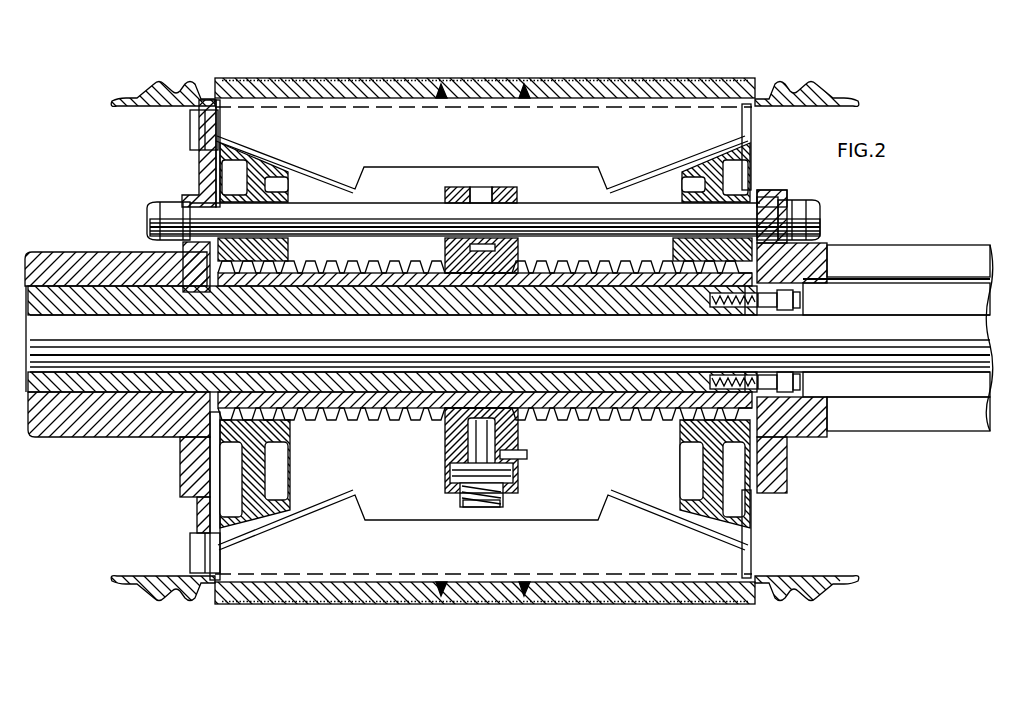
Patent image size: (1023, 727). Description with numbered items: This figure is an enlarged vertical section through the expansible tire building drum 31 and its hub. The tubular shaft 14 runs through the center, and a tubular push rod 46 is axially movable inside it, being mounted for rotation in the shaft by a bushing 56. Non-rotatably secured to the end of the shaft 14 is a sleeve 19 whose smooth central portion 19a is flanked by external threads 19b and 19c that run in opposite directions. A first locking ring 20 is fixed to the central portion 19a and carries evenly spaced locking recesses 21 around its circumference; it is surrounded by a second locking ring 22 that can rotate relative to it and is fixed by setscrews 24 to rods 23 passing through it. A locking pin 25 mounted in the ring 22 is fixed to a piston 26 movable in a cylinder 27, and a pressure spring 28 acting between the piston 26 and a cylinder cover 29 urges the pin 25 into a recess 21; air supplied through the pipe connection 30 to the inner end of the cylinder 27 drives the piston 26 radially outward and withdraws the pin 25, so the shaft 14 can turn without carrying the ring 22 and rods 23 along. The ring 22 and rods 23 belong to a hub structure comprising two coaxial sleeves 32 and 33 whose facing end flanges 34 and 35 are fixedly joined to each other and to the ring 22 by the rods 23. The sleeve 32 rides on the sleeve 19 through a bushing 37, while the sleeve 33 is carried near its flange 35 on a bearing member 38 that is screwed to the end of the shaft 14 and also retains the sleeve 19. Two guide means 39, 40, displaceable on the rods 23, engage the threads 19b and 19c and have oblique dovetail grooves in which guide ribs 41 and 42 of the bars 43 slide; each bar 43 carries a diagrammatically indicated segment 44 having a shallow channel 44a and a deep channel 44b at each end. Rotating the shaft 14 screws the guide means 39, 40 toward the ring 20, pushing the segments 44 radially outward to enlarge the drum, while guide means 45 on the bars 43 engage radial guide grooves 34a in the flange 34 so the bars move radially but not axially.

The shaft 14 is at (60, 440).
The sleeve 19 is at (343, 423).
The central portion 19a is at (440, 425).
The external thread 19b is at (315, 423).
The external thread 19c is at (592, 423).
The locking ring 20 is at (522, 428).
The locking recesses 21 is at (520, 247).
The locking ring 22 is at (518, 191).
The rods 23 is at (378, 208).
The setscrews 24 is at (483, 197).
The locking pin 25 is at (473, 447).
The piston 26 is at (520, 473).
The cylinder 27 is at (447, 484).
The pressure spring 28 is at (503, 495).
The cylinder cover 29 is at (485, 505).
The pipe connection 30 is at (527, 453).
The tire building drum 31 is at (600, 79).
The sleeve 32 is at (70, 255).
The sleeve 33 is at (861, 252).
The end flange 34 is at (200, 173).
The radial guide grooves 34a is at (198, 156).
The end flange 35 is at (772, 192).
The bushing 37 is at (150, 438).
The bearing member 38 is at (803, 393).
The guide means 39 is at (290, 249).
The guide means 40 is at (751, 146).
The guide rib 41 is at (292, 176).
The guide rib 42 is at (625, 177).
The bars 43 is at (372, 117).
The segment 44 is at (289, 82).
The shallow channel 44a is at (127, 95).
The deep channel 44b is at (177, 91).
The guide means 45 is at (190, 123).
The push rod 46 is at (117, 323).
The bushing 56 is at (695, 367).